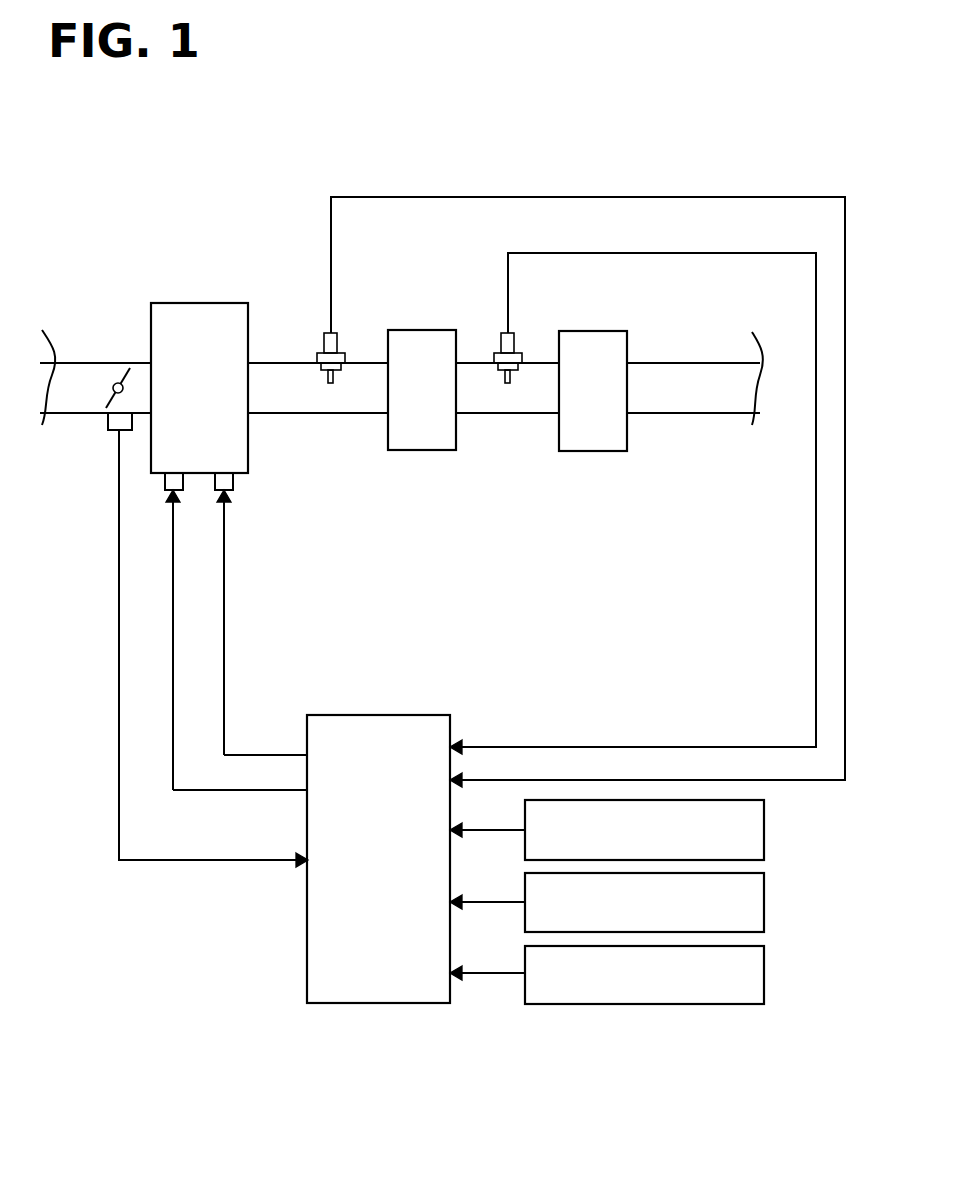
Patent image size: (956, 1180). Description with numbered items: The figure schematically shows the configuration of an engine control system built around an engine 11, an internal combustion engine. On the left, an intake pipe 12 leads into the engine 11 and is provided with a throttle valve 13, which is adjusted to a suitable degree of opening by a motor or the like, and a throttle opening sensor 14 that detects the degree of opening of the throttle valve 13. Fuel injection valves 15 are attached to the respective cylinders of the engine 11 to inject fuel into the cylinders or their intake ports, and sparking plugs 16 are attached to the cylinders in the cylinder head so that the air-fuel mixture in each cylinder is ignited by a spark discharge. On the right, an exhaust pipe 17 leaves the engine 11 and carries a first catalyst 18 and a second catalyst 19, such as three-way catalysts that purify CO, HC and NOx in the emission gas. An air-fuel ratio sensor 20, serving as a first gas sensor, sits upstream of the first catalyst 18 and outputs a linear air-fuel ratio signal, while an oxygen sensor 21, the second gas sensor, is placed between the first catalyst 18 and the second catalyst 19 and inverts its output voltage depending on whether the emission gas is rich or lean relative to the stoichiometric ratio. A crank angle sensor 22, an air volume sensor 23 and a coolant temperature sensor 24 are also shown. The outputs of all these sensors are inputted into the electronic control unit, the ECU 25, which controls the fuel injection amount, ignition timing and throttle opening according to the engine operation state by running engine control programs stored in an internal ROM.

The engine 11 is at (197, 303).
The intake pipe 12 is at (85, 363).
The throttle valve 13 is at (122, 375).
The throttle opening sensor 14 is at (108, 431).
The fuel injection valve 15 is at (165, 487).
The sparking plug 16 is at (233, 487).
The exhaust pipe 17 is at (327, 415).
The first catalyst 18 is at (425, 451).
The second catalyst 19 is at (595, 452).
The air-fuel ratio sensor 20 is at (318, 357).
The oxygen sensor 21 is at (496, 357).
The crank angle sensor 22 is at (764, 828).
The air volume sensor 23 is at (764, 900).
The coolant temperature sensor 24 is at (764, 971).
The electronic control unit (ECU) 25 is at (376, 715).